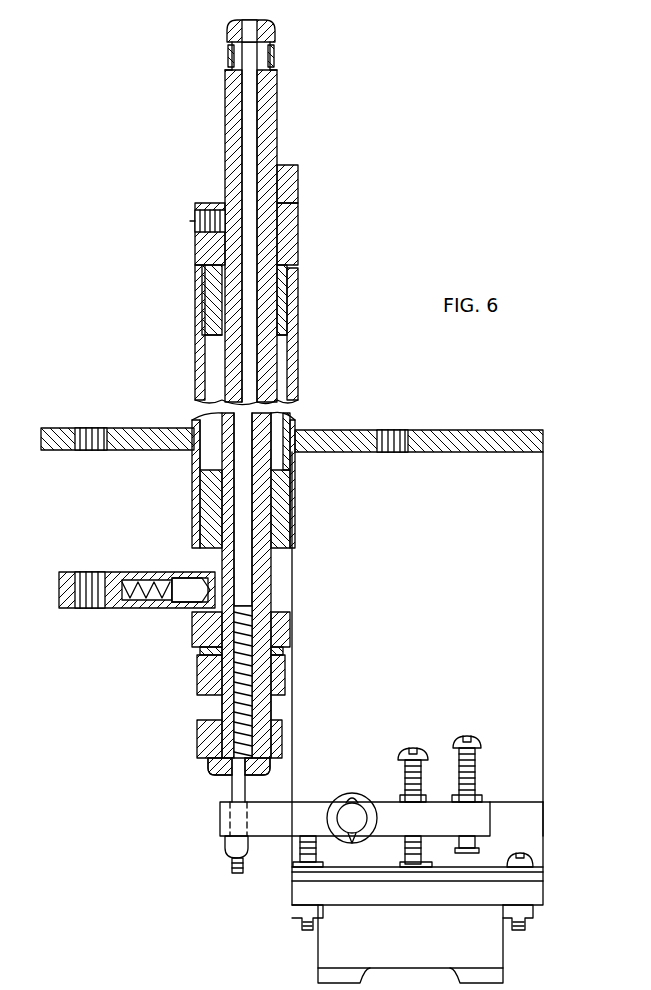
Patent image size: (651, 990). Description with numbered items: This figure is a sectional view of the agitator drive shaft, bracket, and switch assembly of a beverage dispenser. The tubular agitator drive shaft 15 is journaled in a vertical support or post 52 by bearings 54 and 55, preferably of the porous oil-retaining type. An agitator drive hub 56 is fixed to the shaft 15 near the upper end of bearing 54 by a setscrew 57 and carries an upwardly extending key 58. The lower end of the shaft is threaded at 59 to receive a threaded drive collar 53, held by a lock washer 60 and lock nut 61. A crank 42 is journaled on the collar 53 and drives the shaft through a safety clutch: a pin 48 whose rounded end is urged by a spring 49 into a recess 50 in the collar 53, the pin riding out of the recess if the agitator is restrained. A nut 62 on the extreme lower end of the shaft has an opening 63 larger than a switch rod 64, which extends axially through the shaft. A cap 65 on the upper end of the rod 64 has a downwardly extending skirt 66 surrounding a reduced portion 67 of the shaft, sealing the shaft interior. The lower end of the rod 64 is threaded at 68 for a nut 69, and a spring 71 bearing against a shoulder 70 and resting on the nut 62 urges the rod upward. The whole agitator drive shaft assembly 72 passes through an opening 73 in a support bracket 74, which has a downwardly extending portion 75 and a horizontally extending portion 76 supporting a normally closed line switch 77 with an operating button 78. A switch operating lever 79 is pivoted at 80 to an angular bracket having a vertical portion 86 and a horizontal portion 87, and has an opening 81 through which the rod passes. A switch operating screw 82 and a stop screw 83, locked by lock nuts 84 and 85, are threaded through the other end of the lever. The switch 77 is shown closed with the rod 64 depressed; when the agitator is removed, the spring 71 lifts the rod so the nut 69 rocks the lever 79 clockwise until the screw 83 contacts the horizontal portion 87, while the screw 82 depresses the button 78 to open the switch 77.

The agitator drive shaft 15 is at (278, 140).
The crank 42 is at (62, 575).
The pin 48 is at (192, 580).
The spring 49 is at (142, 580).
The recess 50 is at (200, 629).
The vertical support or post 52 is at (298, 368).
The threaded drive collar 53 is at (290, 622).
The bearing 54 is at (283, 302).
The bearing 55 is at (285, 512).
The agitator drive hub 56 is at (298, 226).
The setscrew 57 is at (200, 224).
The key 58 is at (298, 176).
The threaded portion 59 is at (262, 702).
The lock washer 60 is at (283, 651).
The lock nut 61 is at (285, 670).
The nut 62 is at (282, 740).
The opening 63 is at (232, 770).
The switch rod 64 is at (250, 106).
The cap 65 is at (272, 30).
The skirt 66 is at (228, 58).
The reduced portion 67 is at (274, 52).
The threaded portion 68 is at (232, 870).
The nut 69 is at (225, 850).
The shoulder 70 is at (250, 606).
The spring 71 is at (222, 706).
The agitator drive shaft assembly 72 is at (177, 360).
The opening 73 is at (297, 432).
The support bracket 74 is at (484, 425).
The downwardly extending portion 75 is at (543, 622).
The horizontally extending portion 76 is at (543, 876).
The switch 77 is at (503, 950).
The operating button 78 is at (325, 859).
The switch operating lever 79 is at (381, 819).
The pivot 80 is at (356, 812).
The opening 81 is at (220, 822).
The switch operating screw 82 is at (428, 752).
The stop screw 83 is at (484, 742).
The lock nut 84 is at (425, 800).
The lock nut 85 is at (479, 800).
The vertical portion 86 is at (532, 820).
The horizontal portion 87 is at (538, 866).